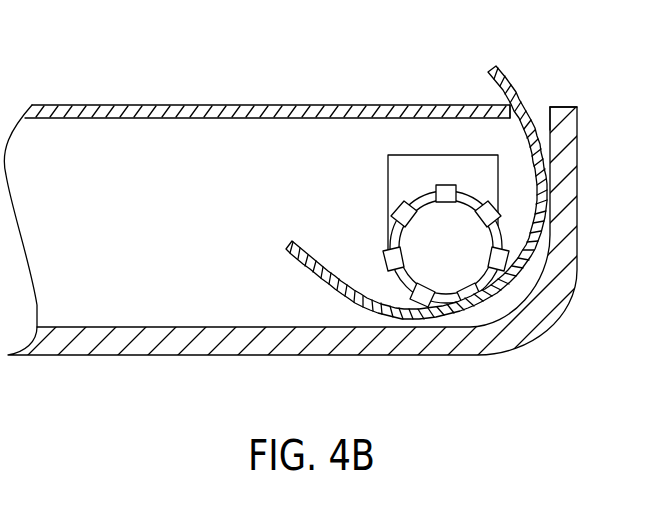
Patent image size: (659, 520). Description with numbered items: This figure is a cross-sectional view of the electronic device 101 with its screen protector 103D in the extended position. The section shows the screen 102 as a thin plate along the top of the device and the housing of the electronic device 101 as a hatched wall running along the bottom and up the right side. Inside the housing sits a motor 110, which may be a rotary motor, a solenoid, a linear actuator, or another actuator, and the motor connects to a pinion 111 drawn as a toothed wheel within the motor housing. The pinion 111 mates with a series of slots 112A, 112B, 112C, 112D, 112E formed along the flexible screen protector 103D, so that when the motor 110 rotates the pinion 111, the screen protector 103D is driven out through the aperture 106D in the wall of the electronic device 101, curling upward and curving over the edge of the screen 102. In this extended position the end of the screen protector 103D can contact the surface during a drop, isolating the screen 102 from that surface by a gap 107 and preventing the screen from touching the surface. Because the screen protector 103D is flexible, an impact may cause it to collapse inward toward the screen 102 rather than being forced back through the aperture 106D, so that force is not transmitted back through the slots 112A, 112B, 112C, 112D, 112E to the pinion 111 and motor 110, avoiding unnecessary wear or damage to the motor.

The electronic device 101 is at (569, 214).
The screen 102 is at (267, 105).
The screen protector 103D is at (493, 70).
The aperture 106D is at (540, 118).
The gap 107 is at (510, 105).
The motor 110 is at (388, 177).
The pinion 111 is at (448, 193).
The slot 112A is at (577, 107).
The slot 112B is at (540, 226).
The slot 112C is at (503, 273).
The slot 112D is at (430, 307).
The slot 112E is at (357, 294).